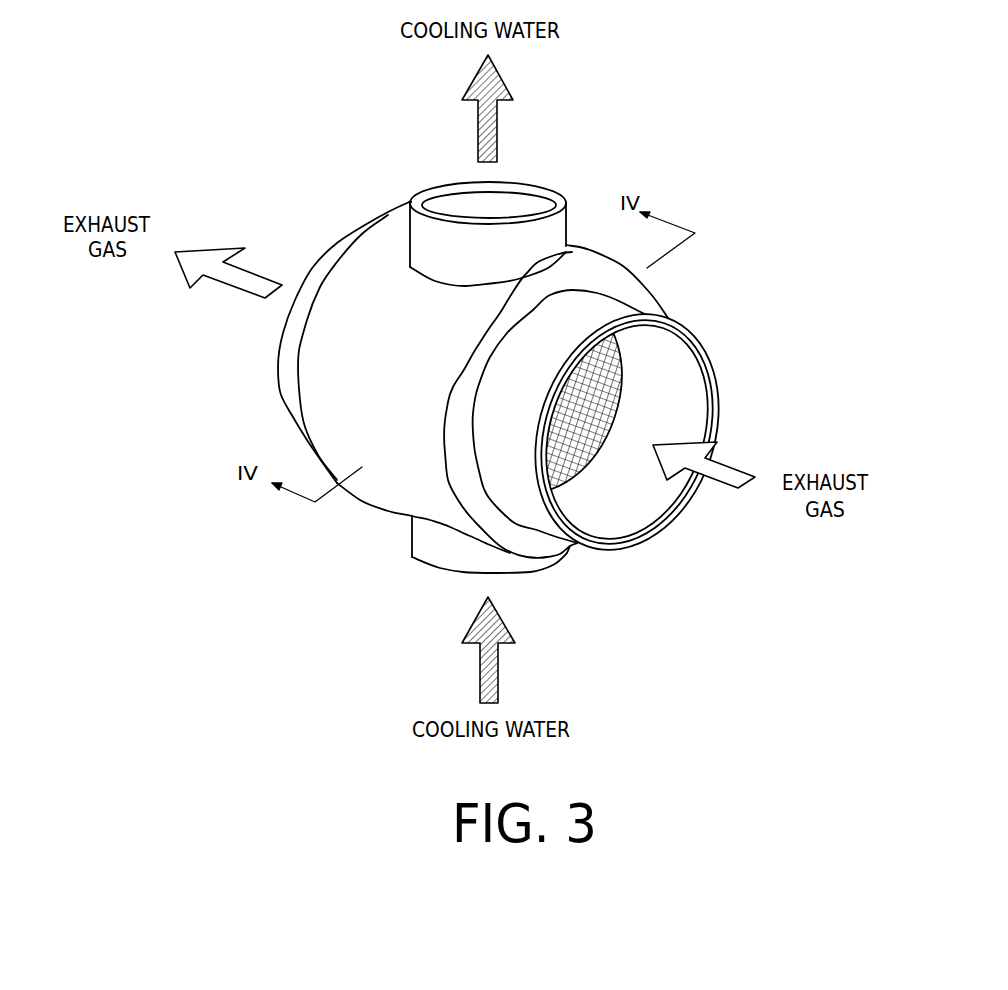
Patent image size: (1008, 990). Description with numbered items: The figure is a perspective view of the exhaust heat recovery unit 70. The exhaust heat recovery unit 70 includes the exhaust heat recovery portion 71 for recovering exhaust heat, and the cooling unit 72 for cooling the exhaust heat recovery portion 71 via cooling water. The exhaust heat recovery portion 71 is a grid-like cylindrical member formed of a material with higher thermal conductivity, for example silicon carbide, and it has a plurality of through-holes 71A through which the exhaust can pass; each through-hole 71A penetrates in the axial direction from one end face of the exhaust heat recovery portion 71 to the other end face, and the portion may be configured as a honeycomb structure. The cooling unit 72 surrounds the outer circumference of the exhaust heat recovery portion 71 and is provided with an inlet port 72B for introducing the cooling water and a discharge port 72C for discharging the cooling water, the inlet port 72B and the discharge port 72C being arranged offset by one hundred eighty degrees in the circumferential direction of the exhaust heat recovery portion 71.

The exhaust heat recovery unit 70 is at (536, 324).
The exhaust heat recovery portion 71 is at (600, 458).
The through-hole 71A is at (620, 392).
The cooling unit 72 is at (392, 487).
The inlet port 72B is at (527, 573).
The discharge port 72C is at (443, 207).